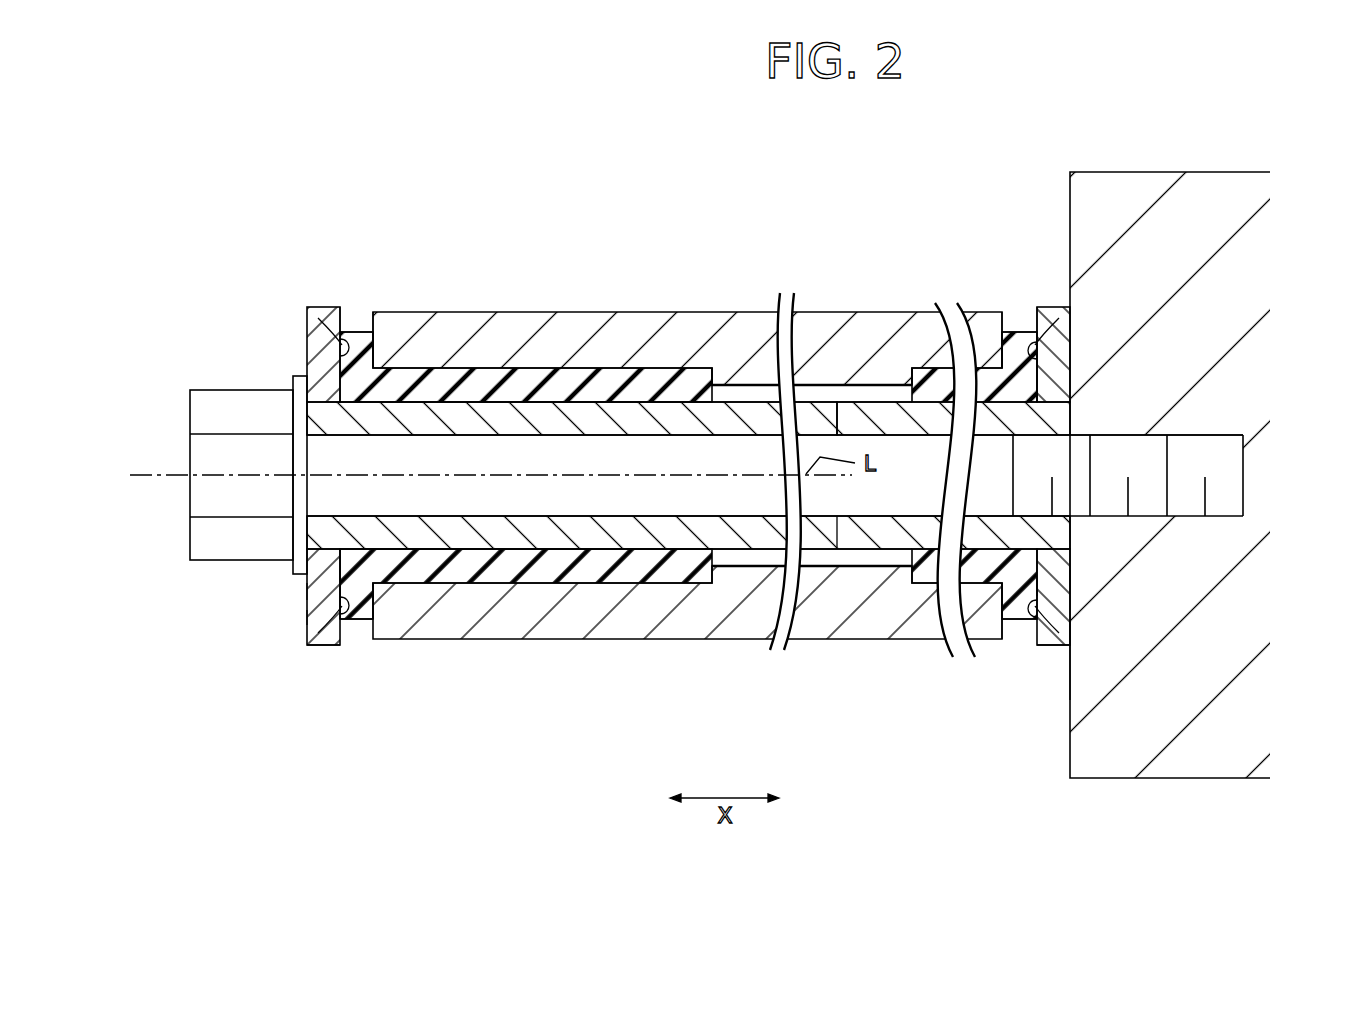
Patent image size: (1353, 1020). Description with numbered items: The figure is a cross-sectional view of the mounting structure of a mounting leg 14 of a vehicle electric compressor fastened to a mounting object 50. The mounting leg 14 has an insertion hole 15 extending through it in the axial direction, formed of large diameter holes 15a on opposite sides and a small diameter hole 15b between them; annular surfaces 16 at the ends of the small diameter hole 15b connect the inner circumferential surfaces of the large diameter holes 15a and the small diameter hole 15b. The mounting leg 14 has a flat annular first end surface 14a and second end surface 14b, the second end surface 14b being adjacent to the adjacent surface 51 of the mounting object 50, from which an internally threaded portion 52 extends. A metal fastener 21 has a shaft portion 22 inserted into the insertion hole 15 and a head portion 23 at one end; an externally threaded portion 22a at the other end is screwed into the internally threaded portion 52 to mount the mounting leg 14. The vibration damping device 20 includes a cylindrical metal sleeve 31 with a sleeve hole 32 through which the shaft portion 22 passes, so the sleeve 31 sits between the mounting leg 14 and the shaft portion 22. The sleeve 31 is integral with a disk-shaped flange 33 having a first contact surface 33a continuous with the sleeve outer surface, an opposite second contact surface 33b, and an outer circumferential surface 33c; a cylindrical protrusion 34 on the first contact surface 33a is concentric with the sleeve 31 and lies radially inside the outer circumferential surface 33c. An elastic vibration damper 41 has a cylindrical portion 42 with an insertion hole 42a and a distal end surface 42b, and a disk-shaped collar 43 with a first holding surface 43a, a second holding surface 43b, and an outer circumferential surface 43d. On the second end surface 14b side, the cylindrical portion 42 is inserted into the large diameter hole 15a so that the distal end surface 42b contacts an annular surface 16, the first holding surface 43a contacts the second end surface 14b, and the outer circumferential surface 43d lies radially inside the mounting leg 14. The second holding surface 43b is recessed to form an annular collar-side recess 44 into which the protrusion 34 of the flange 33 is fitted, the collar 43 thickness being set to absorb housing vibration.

The mounting leg 14 is at (571, 312).
The first end surface 14a is at (338, 345).
The second end surface 14b is at (1020, 650).
The insertion hole 15 is at (857, 385).
The large diameter holes 15a is at (436, 375).
The small diameter hole 15b is at (890, 385).
The annular surfaces 16 is at (740, 585).
The vibration damping device 20 is at (711, 478).
The fastener 21 is at (689, 428).
The shaft portion 22 is at (752, 440).
The externally threaded portion 22a is at (1223, 433).
The head portion 23 is at (268, 390).
The sleeve 31 is at (657, 400).
The sleeve hole 32 is at (816, 405).
The flange 33 is at (1057, 305).
The first contact surface 33a is at (335, 595).
The second contact surface 33b is at (307, 616).
The outer circumferential surface of the flange 33c is at (315, 648).
The protrusion 34 is at (1068, 348).
The elastic vibration damper 41 is at (700, 578).
The cylindrical portion 42 is at (541, 572).
The insertion hole 42a is at (535, 392).
The distal end surface 42b is at (722, 388).
The collar 43 is at (1017, 330).
The first holding surface 43a is at (975, 355).
The second holding surface 43b is at (335, 352).
The outer circumferential surface of the collar 43d is at (360, 330).
The collar-side recess 44 is at (1035, 355).
The mounting object 50 is at (1097, 780).
The adjacent surface 51 is at (1053, 645).
The internally threaded portion 52 is at (1158, 433).